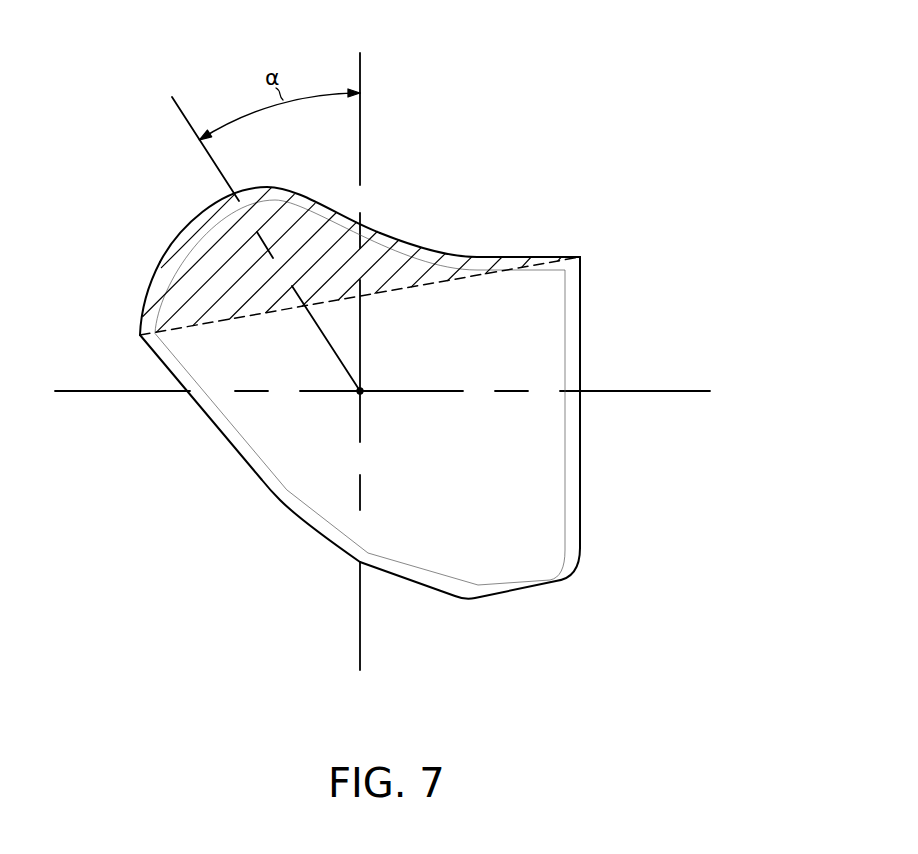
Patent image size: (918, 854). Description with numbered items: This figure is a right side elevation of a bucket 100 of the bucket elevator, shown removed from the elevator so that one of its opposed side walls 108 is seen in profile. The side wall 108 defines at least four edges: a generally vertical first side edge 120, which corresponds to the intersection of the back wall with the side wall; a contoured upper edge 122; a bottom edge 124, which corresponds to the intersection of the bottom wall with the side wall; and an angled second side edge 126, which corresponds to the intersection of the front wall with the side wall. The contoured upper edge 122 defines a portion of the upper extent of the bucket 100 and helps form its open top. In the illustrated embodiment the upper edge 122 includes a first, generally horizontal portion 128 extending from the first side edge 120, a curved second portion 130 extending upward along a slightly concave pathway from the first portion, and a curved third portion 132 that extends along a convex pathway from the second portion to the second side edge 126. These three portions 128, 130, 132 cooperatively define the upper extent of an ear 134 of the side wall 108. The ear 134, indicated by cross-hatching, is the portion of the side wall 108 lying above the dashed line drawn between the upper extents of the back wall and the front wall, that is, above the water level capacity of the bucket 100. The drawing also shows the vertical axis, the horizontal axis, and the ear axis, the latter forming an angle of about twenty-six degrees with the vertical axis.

The bucket 100 is at (510, 142).
The side wall 108 is at (502, 495).
The first side edge 120 is at (581, 432).
The contoured upper edge 122 is at (582, 256).
The bottom edge 124 is at (548, 588).
The second side edge 126 is at (205, 418).
The first portion 128 is at (487, 256).
The second portion 130 is at (342, 204).
The third portion 132 is at (148, 297).
The ear 134 is at (205, 263).